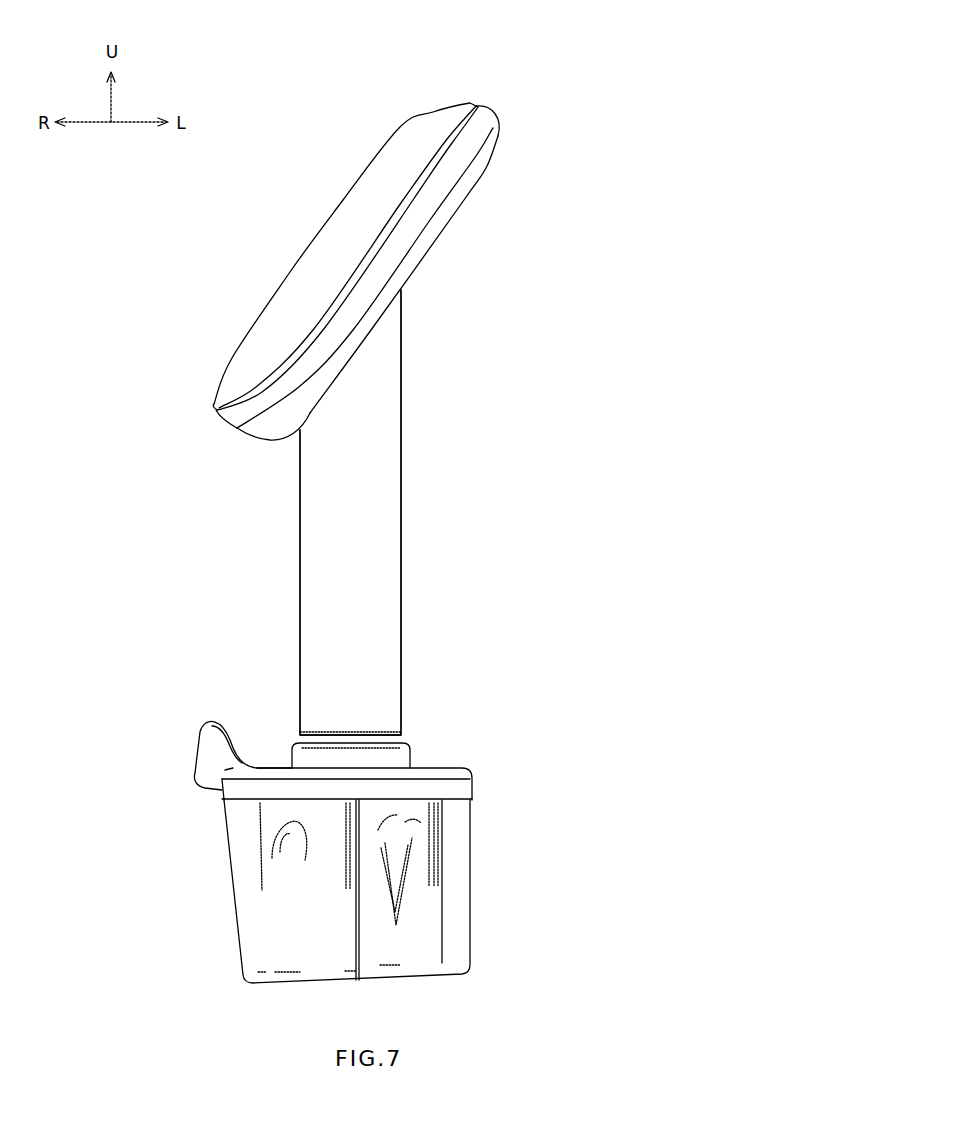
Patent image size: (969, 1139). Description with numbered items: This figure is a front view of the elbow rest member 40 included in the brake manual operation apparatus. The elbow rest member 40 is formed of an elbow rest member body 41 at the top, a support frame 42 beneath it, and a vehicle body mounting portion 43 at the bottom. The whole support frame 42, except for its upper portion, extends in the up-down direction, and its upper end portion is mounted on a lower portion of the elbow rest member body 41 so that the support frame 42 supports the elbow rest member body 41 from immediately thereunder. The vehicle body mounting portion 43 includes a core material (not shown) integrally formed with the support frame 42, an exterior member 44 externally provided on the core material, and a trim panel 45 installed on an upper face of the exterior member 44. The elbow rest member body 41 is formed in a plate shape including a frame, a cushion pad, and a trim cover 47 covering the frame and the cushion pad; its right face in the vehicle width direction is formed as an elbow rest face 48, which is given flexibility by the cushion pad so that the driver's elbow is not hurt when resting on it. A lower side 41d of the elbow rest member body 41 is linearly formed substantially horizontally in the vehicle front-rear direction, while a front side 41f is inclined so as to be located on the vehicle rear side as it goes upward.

The elbow rest member 40 is at (584, 162).
The elbow rest member body 41 is at (277, 291).
The lower side 41d is at (228, 420).
The front side 41f is at (437, 213).
The support frame 42 is at (401, 512).
The vehicle body mounting portion 43 is at (228, 866).
The exterior member 44 is at (472, 884).
The trim panel 45 is at (437, 768).
The trim cover 47 is at (355, 182).
The elbow rest face 48 is at (330, 233).